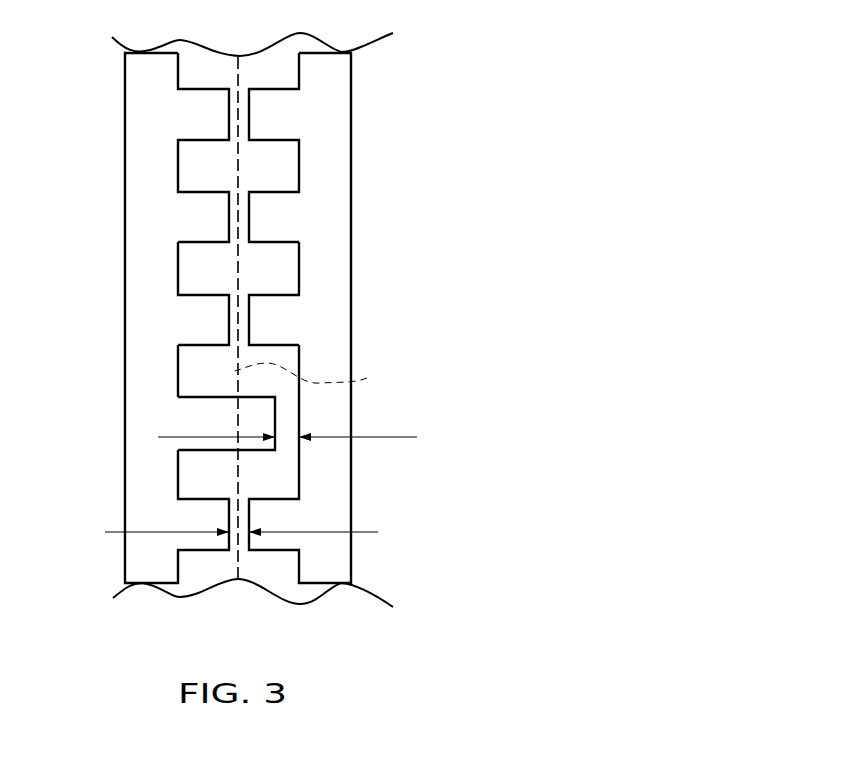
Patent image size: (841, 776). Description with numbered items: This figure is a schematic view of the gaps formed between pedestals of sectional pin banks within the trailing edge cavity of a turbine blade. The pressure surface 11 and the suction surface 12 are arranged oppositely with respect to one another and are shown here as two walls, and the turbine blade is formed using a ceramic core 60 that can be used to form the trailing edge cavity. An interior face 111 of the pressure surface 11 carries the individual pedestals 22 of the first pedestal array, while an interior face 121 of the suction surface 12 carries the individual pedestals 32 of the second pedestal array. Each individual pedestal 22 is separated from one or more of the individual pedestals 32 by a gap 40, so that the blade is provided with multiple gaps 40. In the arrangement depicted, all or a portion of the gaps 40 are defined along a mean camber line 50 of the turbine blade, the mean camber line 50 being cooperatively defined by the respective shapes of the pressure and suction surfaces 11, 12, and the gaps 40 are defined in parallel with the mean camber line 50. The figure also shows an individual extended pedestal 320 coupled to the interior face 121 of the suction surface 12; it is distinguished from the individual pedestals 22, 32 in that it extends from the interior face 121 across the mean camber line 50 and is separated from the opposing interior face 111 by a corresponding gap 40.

The ceramic core 60 is at (527, 158).
The pressure surface 11 is at (333, 245).
The interior face 111 is at (300, 266).
The suction surface 12 is at (137, 298).
The interior face 121 is at (177, 370).
The individual pedestal 22 is at (275, 115).
The individual pedestal 32 is at (202, 117).
The individual extended pedestal 320 is at (180, 418).
The gap 40 is at (367, 437).
The mean camber line 50 is at (316, 378).